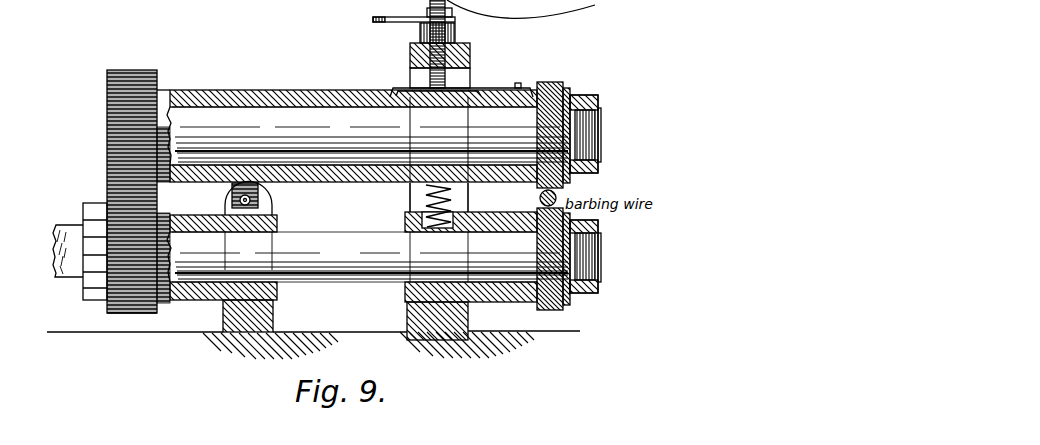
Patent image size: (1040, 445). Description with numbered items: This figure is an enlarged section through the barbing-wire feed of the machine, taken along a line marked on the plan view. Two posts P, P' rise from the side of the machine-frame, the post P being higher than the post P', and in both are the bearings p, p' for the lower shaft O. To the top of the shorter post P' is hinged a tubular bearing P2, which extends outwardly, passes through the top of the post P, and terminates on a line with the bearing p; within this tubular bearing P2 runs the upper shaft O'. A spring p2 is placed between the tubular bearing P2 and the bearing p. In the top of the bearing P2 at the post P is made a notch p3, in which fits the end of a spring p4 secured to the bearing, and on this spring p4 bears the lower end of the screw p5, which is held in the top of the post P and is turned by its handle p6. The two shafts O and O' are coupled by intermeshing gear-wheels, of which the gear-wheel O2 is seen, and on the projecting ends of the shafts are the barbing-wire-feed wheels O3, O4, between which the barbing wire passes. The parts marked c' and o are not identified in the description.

The barbing-wire-feed wheel O3 is at (139, 80).
The gear-wheel O2 is at (146, 297).
The sleeve c' is at (95, 243).
The shaft end o is at (68, 251).
The tubular bearing P2 is at (343, 100).
The shaft O' is at (367, 136).
The barbing-wire-feed wheel O4 is at (569, 120).
The spring p4 is at (486, 88).
The screw p5 is at (465, 46).
The notch p3 is at (402, 108).
The handle p6 is at (413, 28).
The shaft O is at (367, 257).
The post P' is at (233, 241).
The bearing p' is at (260, 313).
The post P is at (471, 242).
The spring p2 is at (410, 197).
The bearing p is at (410, 318).